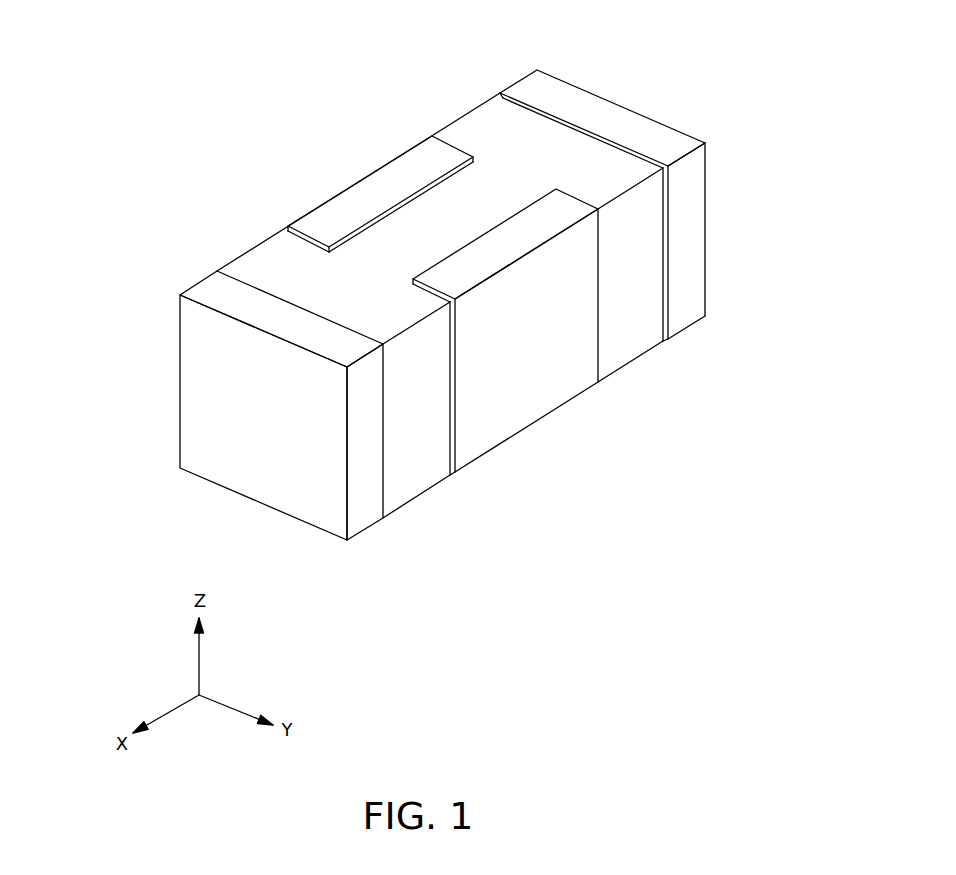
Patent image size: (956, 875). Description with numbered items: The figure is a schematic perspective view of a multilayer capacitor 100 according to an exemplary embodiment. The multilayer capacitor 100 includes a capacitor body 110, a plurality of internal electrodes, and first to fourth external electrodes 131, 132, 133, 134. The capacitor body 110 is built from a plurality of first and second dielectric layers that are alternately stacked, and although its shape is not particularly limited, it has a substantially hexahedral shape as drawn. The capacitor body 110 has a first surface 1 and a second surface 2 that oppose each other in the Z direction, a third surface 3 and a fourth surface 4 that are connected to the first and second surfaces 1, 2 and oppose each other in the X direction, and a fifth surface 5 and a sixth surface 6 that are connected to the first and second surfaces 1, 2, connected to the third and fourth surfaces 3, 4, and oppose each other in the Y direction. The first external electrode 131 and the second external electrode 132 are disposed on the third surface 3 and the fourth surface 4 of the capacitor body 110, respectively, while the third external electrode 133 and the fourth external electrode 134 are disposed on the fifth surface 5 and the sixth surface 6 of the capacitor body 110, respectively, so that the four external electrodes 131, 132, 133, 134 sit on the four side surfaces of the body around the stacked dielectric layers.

The multilayer capacitor 100 is at (220, 58).
The first surface 1 is at (395, 480).
The second surface 2 is at (275, 263).
The third surface 3 is at (220, 457).
The fourth surface 4 is at (693, 246).
The fifth surface 5 is at (422, 462).
The sixth surface 6 is at (237, 270).
The capacitor body 110 is at (490, 147).
The first external electrode 131 is at (225, 380).
The second external electrode 132 is at (628, 118).
The third external electrode 133 is at (537, 397).
The fourth external electrode 134 is at (370, 200).